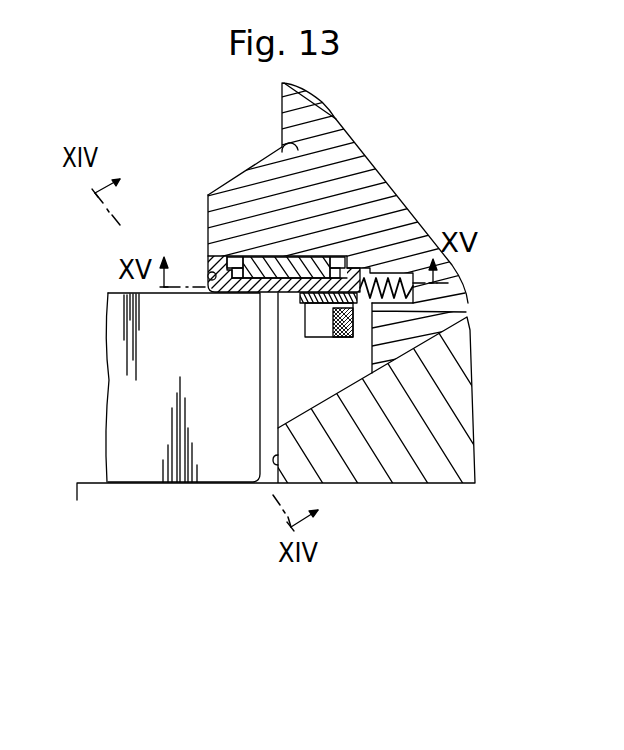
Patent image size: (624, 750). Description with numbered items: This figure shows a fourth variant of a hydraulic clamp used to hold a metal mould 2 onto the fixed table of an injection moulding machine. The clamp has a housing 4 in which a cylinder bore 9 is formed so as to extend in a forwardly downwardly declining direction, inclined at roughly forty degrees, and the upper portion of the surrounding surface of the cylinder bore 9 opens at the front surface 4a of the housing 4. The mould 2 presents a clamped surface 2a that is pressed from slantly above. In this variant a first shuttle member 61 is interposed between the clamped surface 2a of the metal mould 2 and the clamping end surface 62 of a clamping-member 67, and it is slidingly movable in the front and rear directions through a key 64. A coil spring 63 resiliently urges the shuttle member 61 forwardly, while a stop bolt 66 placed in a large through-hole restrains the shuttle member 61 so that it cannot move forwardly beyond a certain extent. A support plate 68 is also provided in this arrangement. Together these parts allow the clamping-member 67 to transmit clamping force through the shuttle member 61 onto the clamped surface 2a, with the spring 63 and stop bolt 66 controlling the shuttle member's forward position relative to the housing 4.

The metal mould 2 is at (117, 378).
The clamped surface 2a is at (137, 291).
The housing 4 is at (446, 485).
The front surface 4a is at (280, 461).
The cylinder bore 9 is at (283, 150).
The first shuttle member 61 is at (223, 292).
The clamping end surface 62 is at (204, 279).
The coil spring 63 is at (398, 312).
The key 64 is at (244, 279).
The stop bolt 66 is at (323, 338).
The clamping-member 67 is at (231, 182).
The support plate 68 is at (293, 296).